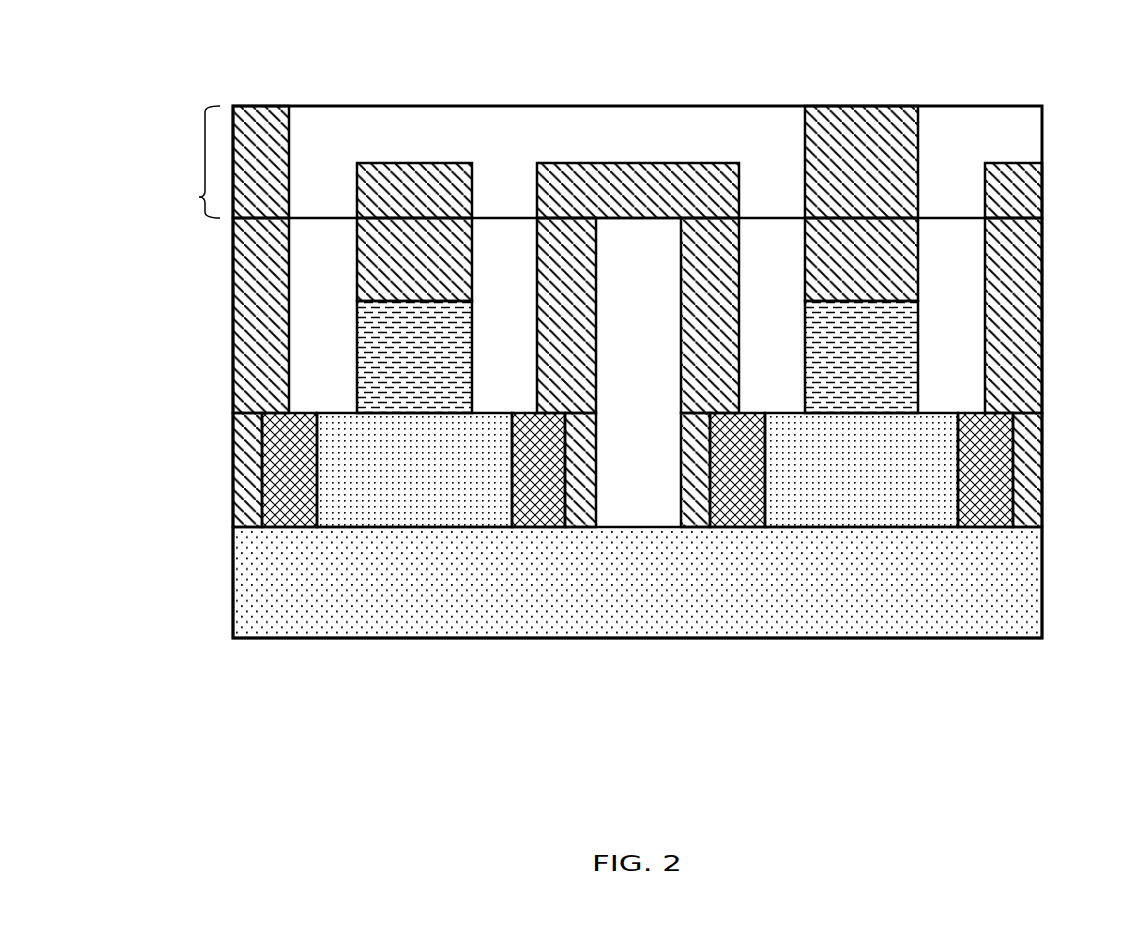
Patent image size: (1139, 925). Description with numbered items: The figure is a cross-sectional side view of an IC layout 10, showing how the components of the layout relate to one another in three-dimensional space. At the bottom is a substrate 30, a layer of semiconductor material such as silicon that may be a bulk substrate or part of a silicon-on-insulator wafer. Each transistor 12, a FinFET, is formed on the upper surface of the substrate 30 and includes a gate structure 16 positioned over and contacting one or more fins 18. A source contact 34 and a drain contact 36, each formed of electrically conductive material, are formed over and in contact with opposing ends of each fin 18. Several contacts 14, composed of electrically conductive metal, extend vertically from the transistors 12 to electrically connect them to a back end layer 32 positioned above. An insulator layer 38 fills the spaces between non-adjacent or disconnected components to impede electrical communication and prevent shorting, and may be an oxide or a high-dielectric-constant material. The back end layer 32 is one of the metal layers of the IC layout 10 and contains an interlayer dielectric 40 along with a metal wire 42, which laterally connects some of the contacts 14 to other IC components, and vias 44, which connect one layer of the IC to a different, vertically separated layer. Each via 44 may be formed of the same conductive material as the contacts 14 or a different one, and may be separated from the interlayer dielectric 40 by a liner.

The IC layout 10 is at (200, 62).
The transistor 12 is at (252, 488).
The contact 14 is at (233, 272).
The gate structure 16 is at (472, 385).
The fin 18 is at (338, 410).
The substrate 30 is at (1042, 555).
The back end layer 32 is at (191, 162).
The source contact 34 is at (262, 462).
The drain contact 36 is at (565, 478).
The insulator layer 38 is at (335, 318).
The interlayer dielectric 40 is at (597, 142).
The metal wire 42 is at (421, 163).
The via 44 is at (265, 106).